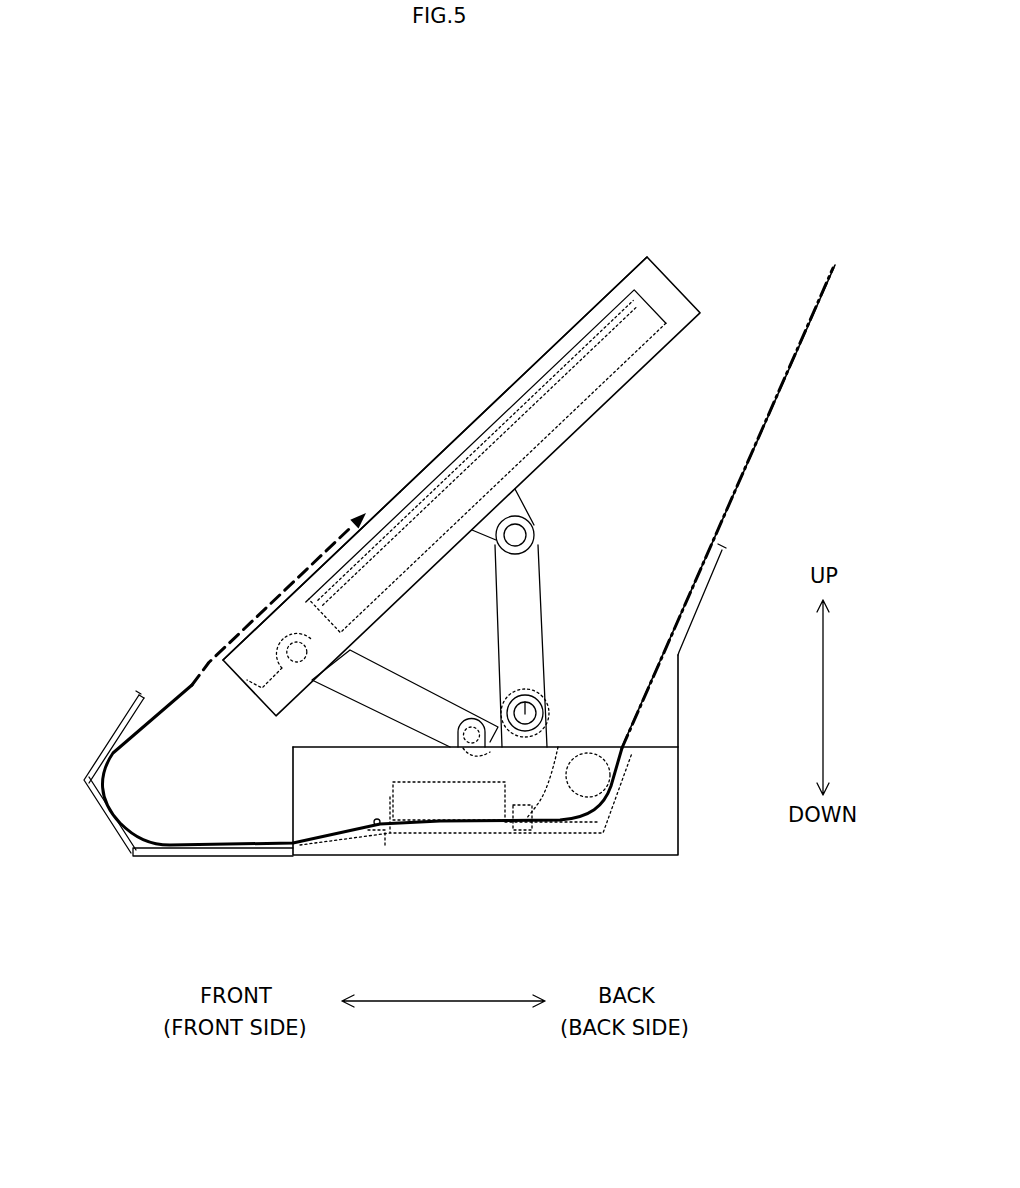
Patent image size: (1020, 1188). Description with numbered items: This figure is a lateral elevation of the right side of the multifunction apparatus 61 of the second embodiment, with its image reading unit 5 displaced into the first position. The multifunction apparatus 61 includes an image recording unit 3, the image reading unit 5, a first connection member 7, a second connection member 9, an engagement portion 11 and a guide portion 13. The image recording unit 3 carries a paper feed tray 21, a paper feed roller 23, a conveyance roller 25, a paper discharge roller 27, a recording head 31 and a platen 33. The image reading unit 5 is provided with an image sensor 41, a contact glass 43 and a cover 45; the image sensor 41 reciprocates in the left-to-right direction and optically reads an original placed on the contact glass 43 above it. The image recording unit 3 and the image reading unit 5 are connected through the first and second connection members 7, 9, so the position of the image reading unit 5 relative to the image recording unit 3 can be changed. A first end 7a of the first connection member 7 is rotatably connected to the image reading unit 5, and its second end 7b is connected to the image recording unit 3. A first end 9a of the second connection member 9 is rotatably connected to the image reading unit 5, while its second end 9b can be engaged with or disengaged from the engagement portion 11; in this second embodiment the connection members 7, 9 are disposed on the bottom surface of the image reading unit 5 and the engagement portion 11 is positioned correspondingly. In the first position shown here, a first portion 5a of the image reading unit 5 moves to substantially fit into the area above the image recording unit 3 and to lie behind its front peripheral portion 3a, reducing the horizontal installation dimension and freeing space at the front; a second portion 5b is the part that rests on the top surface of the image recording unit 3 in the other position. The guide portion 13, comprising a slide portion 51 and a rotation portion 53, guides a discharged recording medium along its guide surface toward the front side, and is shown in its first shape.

The multifunction apparatus 61 is at (517, 190).
The image reading unit 5 is at (451, 453).
The first portion of image reading unit 5a is at (393, 518).
The second portion of image reading unit 5b is at (515, 395).
The cover 45 is at (465, 428).
The contact glass 43 is at (546, 351).
The image sensor 41 is at (617, 377).
The first connection member 7 is at (530, 585).
The first end of first connection member 7a is at (516, 536).
The second end of first connection member 7b is at (526, 700).
The second connection member 9 is at (362, 657).
The first end of second connection member 9a is at (262, 688).
The second end of second connection member 9b is at (477, 730).
The engagement portion 11 is at (463, 700).
The image recording unit 3 is at (450, 796).
The front peripheral portion 3a is at (300, 748).
The paper feed tray 21 is at (720, 546).
The paper feed roller 23 is at (613, 745).
The conveyance roller 25 is at (558, 746).
The paper discharge roller 27 is at (382, 840).
The recording head 31 is at (393, 797).
The platen 33 is at (468, 837).
The guide portion 13 is at (143, 695).
The slide portion 51 is at (185, 858).
The rotation portion 53 is at (108, 820).